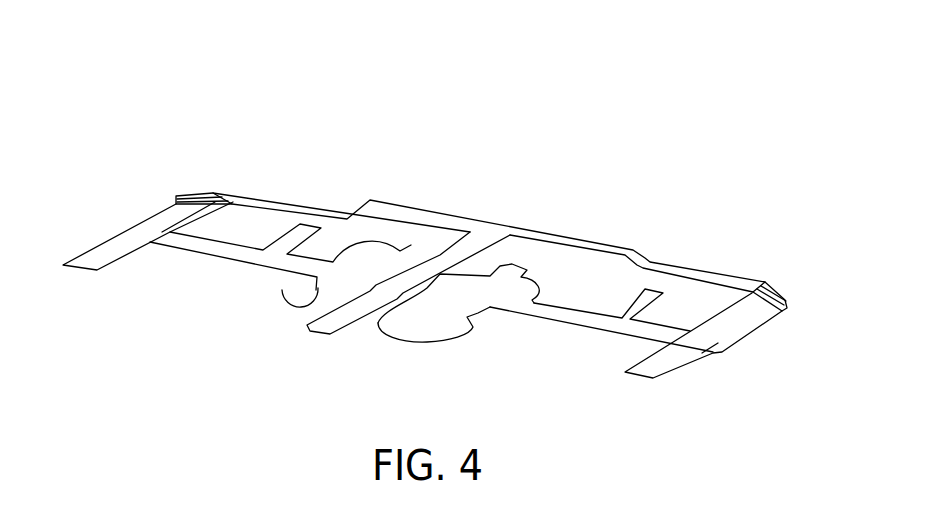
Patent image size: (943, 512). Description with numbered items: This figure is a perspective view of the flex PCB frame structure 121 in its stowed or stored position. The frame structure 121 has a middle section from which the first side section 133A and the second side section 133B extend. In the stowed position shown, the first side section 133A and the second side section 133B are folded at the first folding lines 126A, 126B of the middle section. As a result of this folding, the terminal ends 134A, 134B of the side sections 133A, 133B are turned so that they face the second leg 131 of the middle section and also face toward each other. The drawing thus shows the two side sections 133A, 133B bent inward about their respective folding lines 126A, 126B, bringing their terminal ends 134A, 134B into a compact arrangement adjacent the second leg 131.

The flex PCB frame structure 121 is at (528, 204).
The first folding line 126A is at (215, 192).
The first folding line 126B is at (781, 294).
The second leg 131 is at (310, 328).
The first side section 133A is at (193, 245).
The second side section 133B is at (572, 315).
The terminal end 134A is at (311, 302).
The terminal end 134B is at (473, 292).